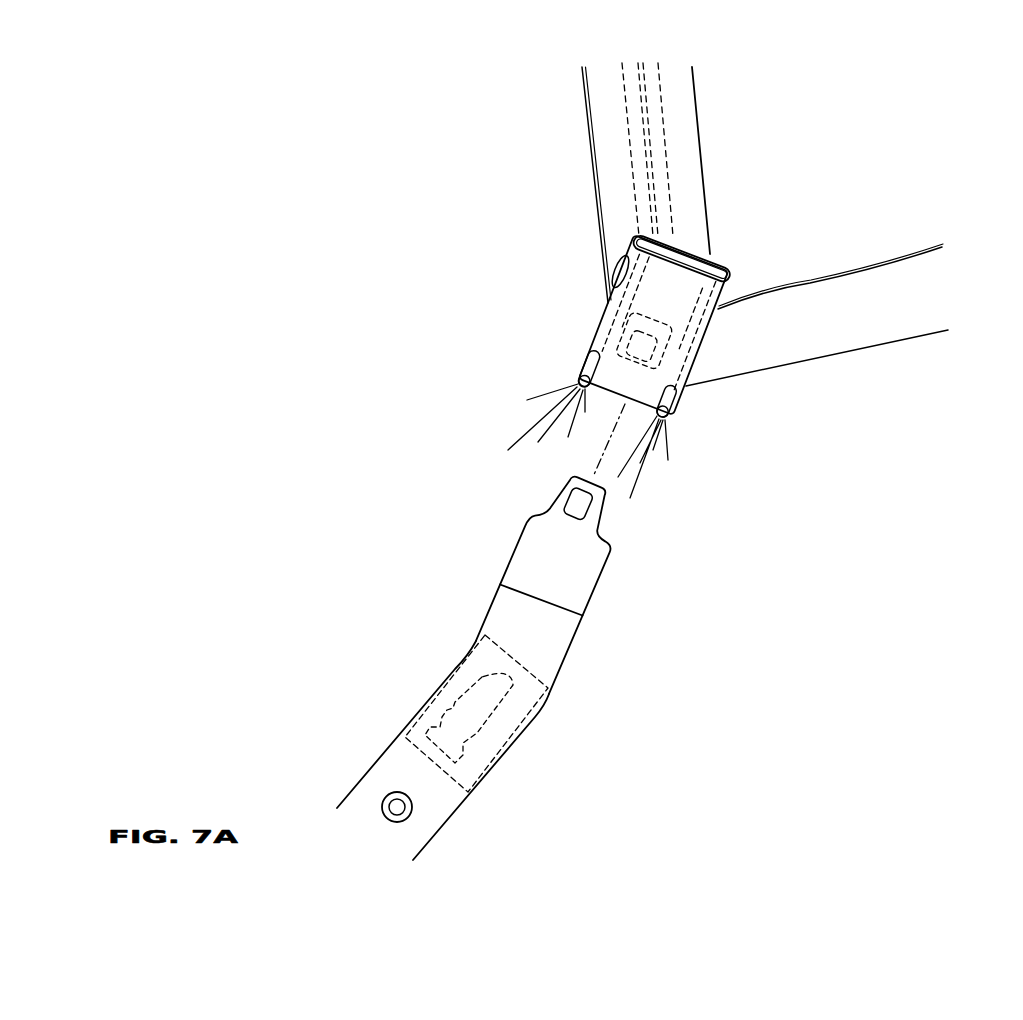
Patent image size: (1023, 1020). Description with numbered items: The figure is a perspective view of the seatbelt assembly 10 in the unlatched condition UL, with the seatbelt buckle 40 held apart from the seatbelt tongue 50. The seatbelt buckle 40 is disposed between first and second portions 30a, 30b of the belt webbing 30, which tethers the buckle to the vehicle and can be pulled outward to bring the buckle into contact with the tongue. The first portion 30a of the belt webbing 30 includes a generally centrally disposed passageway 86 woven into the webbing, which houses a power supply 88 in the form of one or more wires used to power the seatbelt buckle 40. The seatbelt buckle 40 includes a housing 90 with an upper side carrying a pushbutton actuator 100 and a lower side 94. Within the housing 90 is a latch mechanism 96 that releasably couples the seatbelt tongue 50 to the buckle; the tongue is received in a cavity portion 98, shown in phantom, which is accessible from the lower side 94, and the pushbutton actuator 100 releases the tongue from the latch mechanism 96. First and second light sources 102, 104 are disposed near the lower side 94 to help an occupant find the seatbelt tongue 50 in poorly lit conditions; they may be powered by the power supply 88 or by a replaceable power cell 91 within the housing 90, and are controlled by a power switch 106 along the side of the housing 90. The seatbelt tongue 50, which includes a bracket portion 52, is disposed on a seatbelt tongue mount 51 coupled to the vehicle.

The seatbelt assembly 10 is at (438, 260).
The belt webbing 30 is at (711, 235).
The first portion of the belt webbing 30a is at (683, 115).
The second portion of the belt webbing 30b is at (887, 335).
The seatbelt buckle 40 is at (623, 334).
The seatbelt tongue 50 is at (539, 580).
The seatbelt tongue mount 51 is at (457, 605).
The bracket portion 52 is at (540, 567).
The passageway 86 is at (628, 128).
The power supply 88 is at (637, 172).
The housing 90 is at (652, 326).
The power cell 91 is at (698, 357).
The lower side 94 is at (644, 340).
The latch mechanism 96 is at (657, 320).
The cavity portion 98 is at (642, 346).
The pushbutton actuator 100 is at (682, 259).
The first light source 102 is at (589, 369).
The second light source 104 is at (666, 401).
The power switch 106 is at (620, 272).
The unlatched condition UL is at (652, 487).